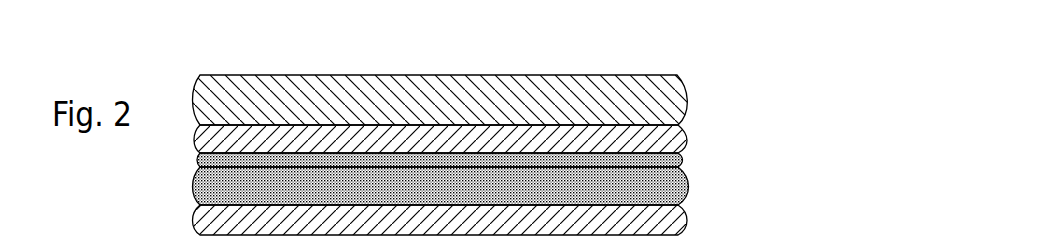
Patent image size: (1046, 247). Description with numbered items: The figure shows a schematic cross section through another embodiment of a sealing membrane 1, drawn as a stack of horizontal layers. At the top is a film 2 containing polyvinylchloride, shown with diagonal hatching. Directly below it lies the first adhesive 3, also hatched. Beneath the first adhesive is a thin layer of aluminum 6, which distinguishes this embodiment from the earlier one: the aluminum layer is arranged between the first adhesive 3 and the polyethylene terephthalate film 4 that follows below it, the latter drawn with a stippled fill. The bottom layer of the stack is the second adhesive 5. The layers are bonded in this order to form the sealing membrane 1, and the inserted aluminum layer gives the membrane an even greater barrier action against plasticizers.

The sealing membrane 1 is at (217, 57).
The film (F1) containing polyvinylchloride 2 is at (657, 90).
The first adhesive (K1) 3 is at (673, 148).
The polyethylene terephthalate film (F2) 4 is at (686, 185).
The second adhesive (K2) 5 is at (686, 220).
The layer of aluminum (F3) 6 is at (676, 160).